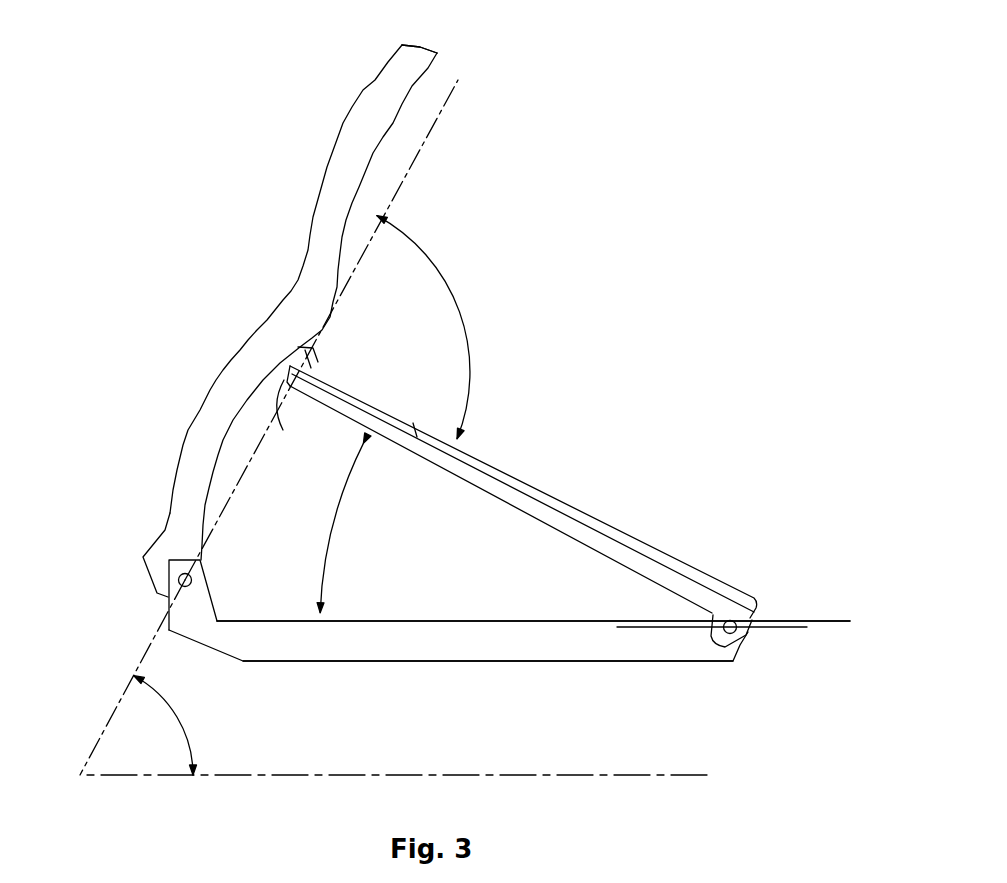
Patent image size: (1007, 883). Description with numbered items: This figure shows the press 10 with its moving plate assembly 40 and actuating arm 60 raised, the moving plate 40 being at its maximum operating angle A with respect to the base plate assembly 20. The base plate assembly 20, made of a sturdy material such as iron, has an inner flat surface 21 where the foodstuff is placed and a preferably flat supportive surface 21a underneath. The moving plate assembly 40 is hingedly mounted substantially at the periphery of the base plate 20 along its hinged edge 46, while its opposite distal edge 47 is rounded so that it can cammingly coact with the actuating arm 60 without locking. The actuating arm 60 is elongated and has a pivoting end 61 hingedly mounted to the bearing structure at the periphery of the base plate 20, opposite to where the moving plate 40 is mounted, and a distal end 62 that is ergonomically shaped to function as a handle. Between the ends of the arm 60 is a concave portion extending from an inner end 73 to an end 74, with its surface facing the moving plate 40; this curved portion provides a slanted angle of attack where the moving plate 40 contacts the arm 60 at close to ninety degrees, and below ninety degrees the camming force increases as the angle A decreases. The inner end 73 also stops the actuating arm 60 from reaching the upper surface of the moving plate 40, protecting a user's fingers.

The press 10 is at (217, 450).
The base plate assembly 20 is at (313, 662).
The inner flat surface 21 is at (432, 622).
The supportive surface 21a is at (477, 661).
The moving plate assembly 40 is at (613, 520).
The hinged edge 46 is at (748, 628).
The distal edge 47 is at (290, 372).
The actuating arm 60 is at (340, 127).
The pivoting end 61 is at (160, 592).
The distal end 62 is at (418, 47).
The inner end of concave portion 73 is at (207, 580).
The end of concave portion 74 is at (333, 318).